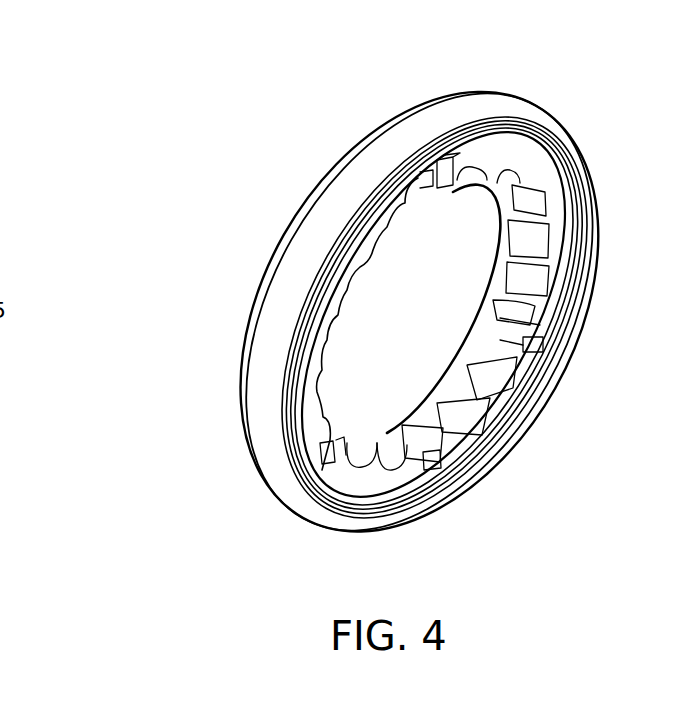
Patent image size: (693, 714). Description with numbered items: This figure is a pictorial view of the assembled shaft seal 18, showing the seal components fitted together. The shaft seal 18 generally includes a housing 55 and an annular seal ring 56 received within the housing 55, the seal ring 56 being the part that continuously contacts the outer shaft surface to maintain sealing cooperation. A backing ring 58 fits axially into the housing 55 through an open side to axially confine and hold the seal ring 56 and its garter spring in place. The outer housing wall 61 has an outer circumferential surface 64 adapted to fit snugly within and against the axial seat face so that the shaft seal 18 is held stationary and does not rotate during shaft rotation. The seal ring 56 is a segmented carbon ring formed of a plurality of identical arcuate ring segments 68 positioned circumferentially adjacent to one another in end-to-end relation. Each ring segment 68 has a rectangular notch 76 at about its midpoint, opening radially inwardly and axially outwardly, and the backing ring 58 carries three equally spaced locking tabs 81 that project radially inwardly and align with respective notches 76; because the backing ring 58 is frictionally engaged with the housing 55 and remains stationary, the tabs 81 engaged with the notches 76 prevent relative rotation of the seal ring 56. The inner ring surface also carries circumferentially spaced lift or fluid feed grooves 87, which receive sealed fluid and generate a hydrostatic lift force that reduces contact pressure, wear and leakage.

The shaft seal 18 is at (253, 160).
The housing 55 is at (453, 112).
The annular seal ring 56 is at (553, 255).
The backing ring 58 is at (537, 143).
The outer housing wall 61 is at (296, 256).
The outer circumferential surface 64 is at (272, 323).
The arcuate ring segments 68 is at (488, 160).
The rectangular notch 76 is at (423, 172).
The locking tabs 81 is at (433, 177).
The lift or fluid feed grooves 87 is at (538, 232).